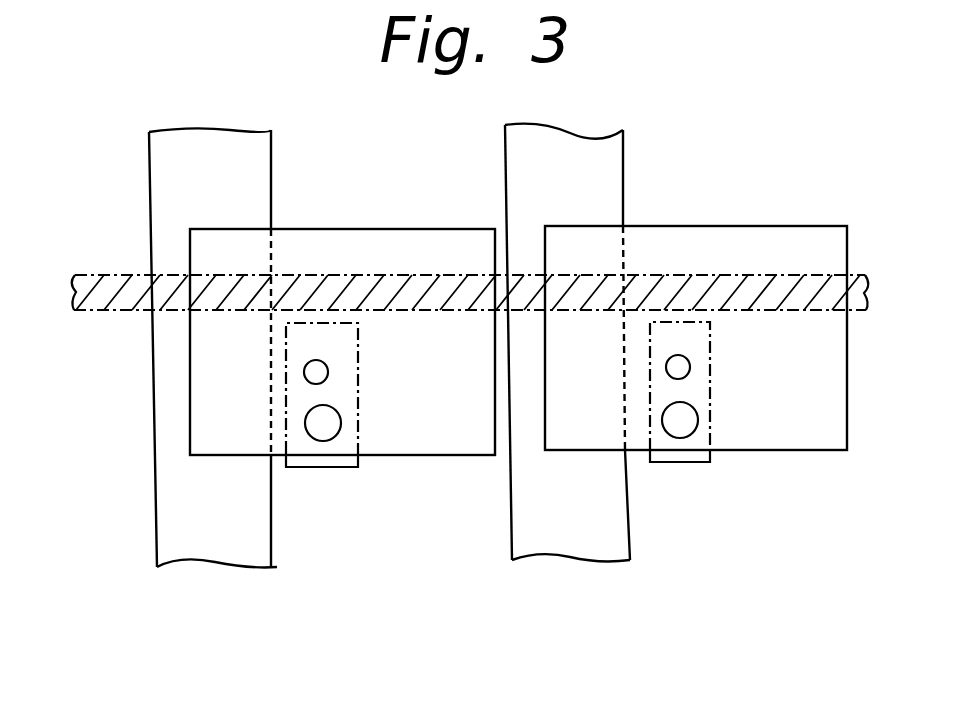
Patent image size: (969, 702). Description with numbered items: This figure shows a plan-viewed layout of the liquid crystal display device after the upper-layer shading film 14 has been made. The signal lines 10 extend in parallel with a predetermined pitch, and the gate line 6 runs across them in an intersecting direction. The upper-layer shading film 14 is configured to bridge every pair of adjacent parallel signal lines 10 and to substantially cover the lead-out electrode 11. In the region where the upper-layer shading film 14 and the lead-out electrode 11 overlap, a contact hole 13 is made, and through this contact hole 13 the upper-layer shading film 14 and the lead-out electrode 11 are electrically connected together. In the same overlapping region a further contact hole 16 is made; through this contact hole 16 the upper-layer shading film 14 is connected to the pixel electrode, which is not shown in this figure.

The gate line 6 is at (122, 288).
The signal line 10 is at (225, 538).
The lead-out electrode 11 is at (322, 462).
The contact hole 13 is at (316, 366).
The upper-layer shading film 14 is at (422, 240).
The contact hole 16 is at (328, 415).